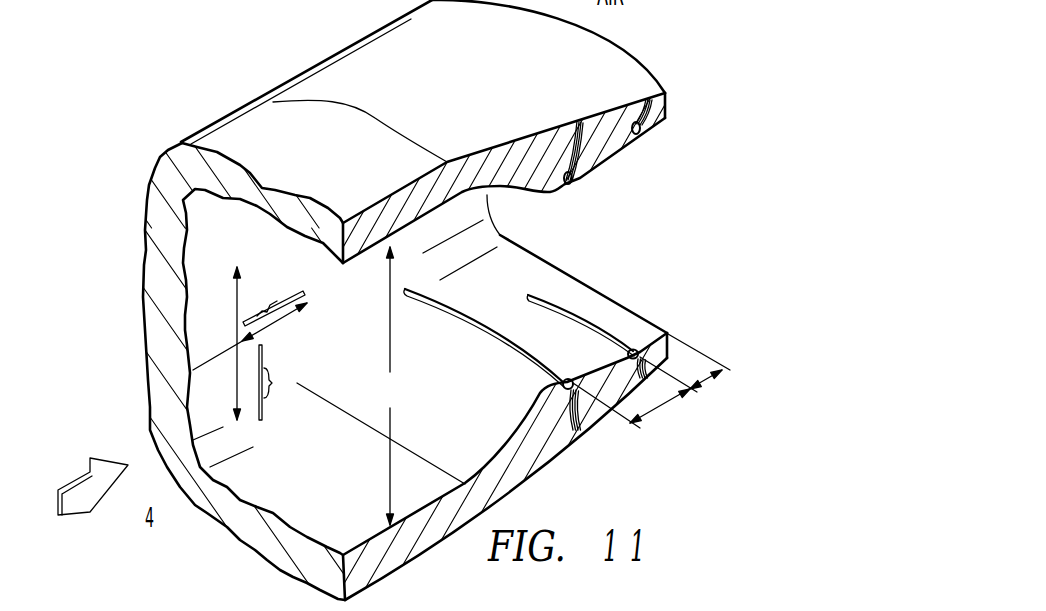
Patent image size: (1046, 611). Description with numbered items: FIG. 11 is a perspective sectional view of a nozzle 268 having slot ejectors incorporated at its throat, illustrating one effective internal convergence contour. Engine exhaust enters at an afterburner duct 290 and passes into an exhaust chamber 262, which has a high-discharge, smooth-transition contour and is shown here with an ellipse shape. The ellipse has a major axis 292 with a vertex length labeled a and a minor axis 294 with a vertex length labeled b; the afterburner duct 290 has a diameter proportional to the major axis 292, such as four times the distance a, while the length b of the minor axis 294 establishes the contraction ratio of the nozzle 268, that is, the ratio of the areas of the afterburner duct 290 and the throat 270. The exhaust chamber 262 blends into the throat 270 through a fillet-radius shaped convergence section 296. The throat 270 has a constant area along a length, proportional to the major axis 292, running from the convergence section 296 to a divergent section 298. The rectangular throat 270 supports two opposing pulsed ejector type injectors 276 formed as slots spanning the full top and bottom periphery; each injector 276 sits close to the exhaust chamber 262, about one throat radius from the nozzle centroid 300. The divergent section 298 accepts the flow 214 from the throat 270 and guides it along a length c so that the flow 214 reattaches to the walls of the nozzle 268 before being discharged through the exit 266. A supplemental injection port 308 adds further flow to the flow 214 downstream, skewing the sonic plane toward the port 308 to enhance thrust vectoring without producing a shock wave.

The flow 214 is at (95, 493).
The exhaust chamber 262 is at (358, 506).
The exit 266 is at (496, 391).
The nozzle 268 is at (473, 215).
The throat 270 is at (567, 350).
The pulsed ejector type injector 276 is at (567, 185).
The afterburner duct 290 is at (208, 557).
The major axis 292 is at (262, 262).
The minor axis 294 is at (288, 408).
The convergence section 296 is at (530, 178).
The divergent section 298 is at (661, 340).
The centroid 300 is at (312, 335).
The supplemental injection port 308 is at (587, 326).